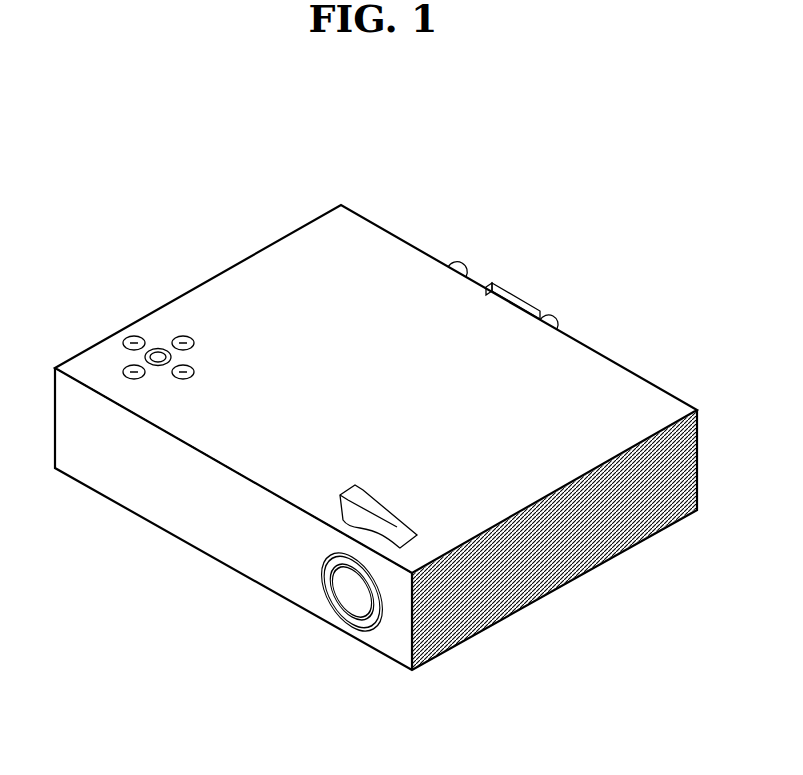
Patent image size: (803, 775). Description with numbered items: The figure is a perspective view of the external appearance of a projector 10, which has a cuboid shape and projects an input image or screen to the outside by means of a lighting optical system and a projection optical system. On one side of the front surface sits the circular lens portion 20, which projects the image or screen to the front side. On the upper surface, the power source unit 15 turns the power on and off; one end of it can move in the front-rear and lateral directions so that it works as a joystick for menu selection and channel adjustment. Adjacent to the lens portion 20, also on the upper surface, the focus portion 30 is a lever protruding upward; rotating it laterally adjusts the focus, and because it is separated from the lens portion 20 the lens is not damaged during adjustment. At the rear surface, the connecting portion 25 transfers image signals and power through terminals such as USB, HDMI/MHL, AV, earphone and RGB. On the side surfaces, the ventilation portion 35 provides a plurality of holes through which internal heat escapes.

The projector 10 is at (80, 143).
The power source unit 15 is at (160, 351).
The lens portion 20 is at (351, 592).
The connecting portion 25 is at (538, 272).
The focus portion 30 is at (338, 495).
The ventilation portion 35 is at (578, 564).